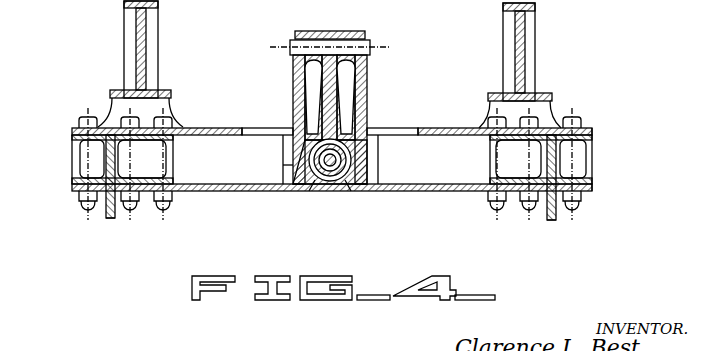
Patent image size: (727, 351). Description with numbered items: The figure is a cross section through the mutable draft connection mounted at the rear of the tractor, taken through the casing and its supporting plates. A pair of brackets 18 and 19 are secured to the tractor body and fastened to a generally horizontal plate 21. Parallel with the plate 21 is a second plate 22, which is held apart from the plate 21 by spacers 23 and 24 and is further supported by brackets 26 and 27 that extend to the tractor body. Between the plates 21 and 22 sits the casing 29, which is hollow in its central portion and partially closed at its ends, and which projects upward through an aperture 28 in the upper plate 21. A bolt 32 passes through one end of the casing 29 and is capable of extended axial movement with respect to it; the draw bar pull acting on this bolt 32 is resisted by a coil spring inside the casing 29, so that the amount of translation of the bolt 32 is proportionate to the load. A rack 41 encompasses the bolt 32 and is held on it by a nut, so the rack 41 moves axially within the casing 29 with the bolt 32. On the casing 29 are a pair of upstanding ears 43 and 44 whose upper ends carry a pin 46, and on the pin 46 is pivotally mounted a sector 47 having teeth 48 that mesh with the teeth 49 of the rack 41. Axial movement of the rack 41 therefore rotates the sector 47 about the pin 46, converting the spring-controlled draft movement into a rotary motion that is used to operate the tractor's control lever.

The bracket 18 is at (124, 40).
The bracket 19 is at (530, 40).
The plate 21 is at (222, 128).
The second plate 22 is at (214, 192).
The spacer 23 is at (95, 158).
The spacer 24 is at (565, 158).
The bracket 26 is at (108, 216).
The bracket 27 is at (556, 220).
The aperture 28 is at (391, 128).
The casing 29 is at (283, 165).
The bolt 32 is at (331, 191).
The rack 41 is at (309, 191).
The ear 43 is at (298, 66).
The ear 44 is at (360, 68).
The pin 46 is at (290, 45).
The sector 47 is at (330, 88).
The teeth 48 is at (352, 150).
The teeth 49 is at (351, 191).